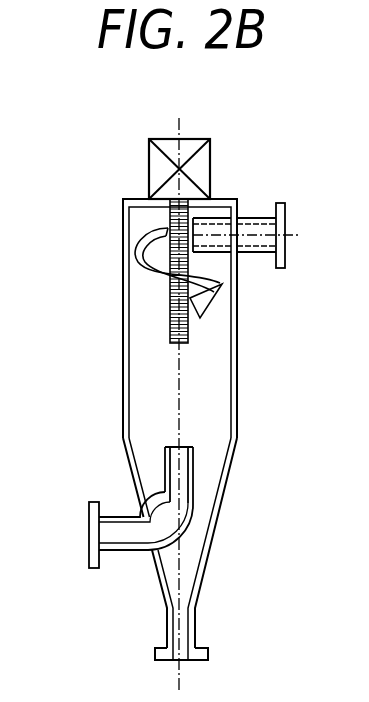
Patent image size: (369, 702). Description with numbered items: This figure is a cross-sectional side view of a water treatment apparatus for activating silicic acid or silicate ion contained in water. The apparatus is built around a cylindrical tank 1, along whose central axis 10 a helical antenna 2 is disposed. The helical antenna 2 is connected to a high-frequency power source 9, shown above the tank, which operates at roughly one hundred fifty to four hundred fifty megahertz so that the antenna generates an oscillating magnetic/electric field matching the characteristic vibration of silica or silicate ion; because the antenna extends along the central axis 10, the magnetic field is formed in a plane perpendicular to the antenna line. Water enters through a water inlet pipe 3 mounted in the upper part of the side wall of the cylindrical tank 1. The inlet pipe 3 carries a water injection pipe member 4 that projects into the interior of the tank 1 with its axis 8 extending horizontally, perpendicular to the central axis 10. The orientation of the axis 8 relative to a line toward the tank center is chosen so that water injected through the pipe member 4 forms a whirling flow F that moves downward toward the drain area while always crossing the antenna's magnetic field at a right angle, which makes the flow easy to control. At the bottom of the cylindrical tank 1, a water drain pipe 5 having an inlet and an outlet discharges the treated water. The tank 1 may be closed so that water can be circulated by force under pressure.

The cylindrical tank 1 is at (237, 405).
The helical antenna 2 is at (170, 312).
The water inlet pipe 3 is at (257, 227).
The water injection pipe member 4 is at (213, 222).
The water drain pipe 5 is at (100, 537).
The axis of the water injection pipe member 8 is at (295, 233).
The high-frequency power source 9 is at (193, 147).
The central axis 10 is at (178, 131).
The whirling flow F is at (220, 278).